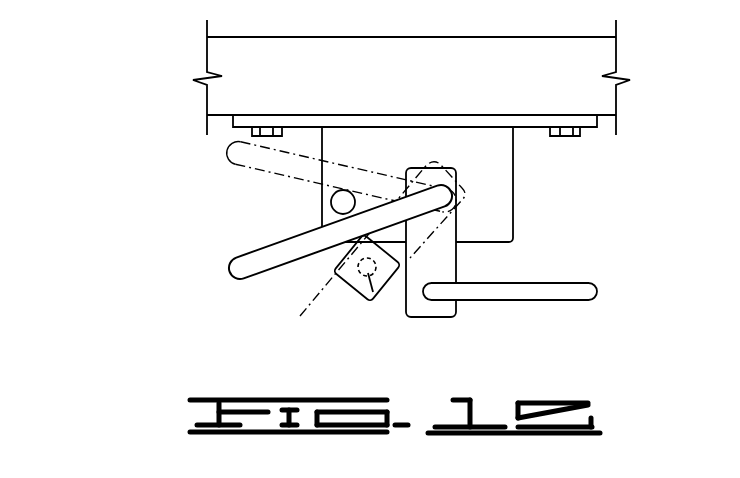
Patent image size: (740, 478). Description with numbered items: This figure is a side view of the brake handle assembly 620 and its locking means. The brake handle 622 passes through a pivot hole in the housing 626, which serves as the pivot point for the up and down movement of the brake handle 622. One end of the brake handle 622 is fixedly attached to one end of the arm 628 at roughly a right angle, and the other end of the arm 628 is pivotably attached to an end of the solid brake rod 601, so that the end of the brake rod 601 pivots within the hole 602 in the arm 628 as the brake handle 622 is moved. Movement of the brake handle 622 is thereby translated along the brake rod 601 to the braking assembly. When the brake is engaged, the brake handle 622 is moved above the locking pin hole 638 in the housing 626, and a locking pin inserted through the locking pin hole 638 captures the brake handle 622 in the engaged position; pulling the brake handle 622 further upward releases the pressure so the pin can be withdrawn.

The brake handle assembly 620 is at (256, 251).
The brake handle 622 is at (237, 267).
The housing 626 is at (497, 162).
The locking pin hole 638 is at (338, 202).
The brake rod 601 is at (567, 283).
The arm 628 is at (300, 316).
The hole 602 is at (373, 293).